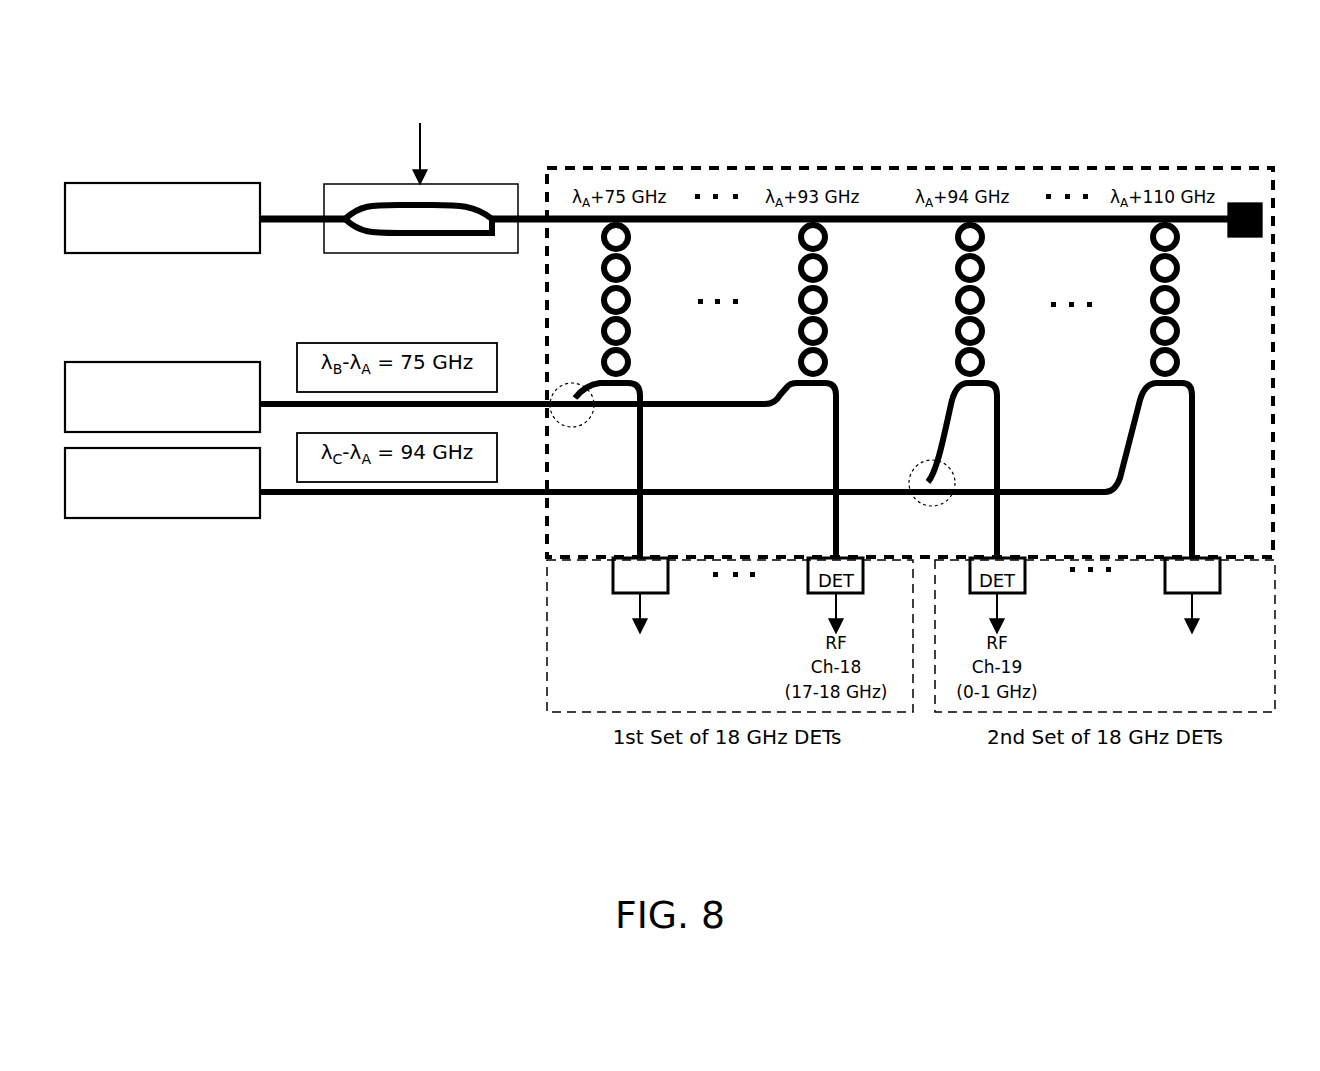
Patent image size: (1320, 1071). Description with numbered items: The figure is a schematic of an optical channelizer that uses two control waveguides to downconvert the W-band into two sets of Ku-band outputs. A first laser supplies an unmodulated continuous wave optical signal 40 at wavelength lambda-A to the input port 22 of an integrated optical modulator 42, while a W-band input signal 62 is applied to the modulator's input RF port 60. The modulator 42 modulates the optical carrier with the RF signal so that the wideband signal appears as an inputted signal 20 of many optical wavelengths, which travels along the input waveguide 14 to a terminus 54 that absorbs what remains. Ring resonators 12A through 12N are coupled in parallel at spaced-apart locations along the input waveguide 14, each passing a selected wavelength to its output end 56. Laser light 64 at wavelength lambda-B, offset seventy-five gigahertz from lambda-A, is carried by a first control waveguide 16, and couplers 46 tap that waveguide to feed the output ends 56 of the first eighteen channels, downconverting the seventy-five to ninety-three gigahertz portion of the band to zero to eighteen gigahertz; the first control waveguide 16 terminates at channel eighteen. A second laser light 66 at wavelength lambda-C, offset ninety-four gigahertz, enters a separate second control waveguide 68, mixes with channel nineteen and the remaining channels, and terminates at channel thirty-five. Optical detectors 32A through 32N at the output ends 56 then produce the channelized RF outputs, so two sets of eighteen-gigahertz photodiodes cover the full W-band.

The continuous wave optical signal 40 is at (162, 202).
The input port 22 is at (281, 182).
The W-band input signal 62 is at (424, 92).
The input RF port 60 is at (450, 153).
The integrated optical modulator 42 is at (767, 251).
The inputted signal 20 is at (622, 141).
The input waveguide 14 is at (906, 332).
The terminus 54 is at (1270, 194).
The first ring resonator 12A is at (632, 238).
The last ring resonator 12N is at (1150, 238).
The output end 56 is at (798, 355).
The coupler 46 is at (747, 454).
The first control waveguide 16 is at (548, 468).
The second control waveguide 68 is at (726, 470).
The laser light at wavelength lambda-B 64 is at (167, 382).
The second laser light at wavelength lambda-C 66 is at (200, 502).
The first optical detector 32A is at (610, 630).
The last optical detector 32N is at (1219, 630).